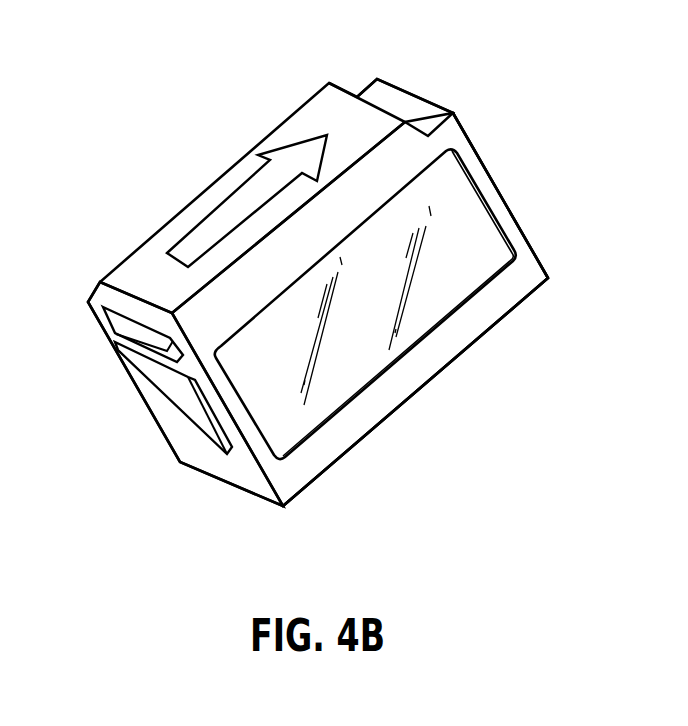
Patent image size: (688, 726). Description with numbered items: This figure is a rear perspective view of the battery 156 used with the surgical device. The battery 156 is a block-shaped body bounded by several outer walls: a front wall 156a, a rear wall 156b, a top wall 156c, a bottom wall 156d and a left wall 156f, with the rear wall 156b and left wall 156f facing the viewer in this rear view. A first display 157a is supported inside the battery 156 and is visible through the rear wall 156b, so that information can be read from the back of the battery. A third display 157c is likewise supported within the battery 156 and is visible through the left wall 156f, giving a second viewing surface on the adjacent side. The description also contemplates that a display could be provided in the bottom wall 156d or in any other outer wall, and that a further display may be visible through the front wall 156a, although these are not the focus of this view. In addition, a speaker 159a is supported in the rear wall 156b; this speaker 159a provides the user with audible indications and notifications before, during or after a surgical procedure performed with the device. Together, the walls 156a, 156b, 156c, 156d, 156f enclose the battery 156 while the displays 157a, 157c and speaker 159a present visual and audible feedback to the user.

The battery 156 is at (166, 174).
The front wall 156a is at (472, 141).
The rear wall 156b is at (257, 478).
The top wall 156c is at (312, 117).
The bottom wall 156d is at (472, 347).
The left wall 156f is at (518, 288).
The first display 157a is at (192, 413).
The third display 157c is at (330, 400).
The speaker 159a is at (124, 330).